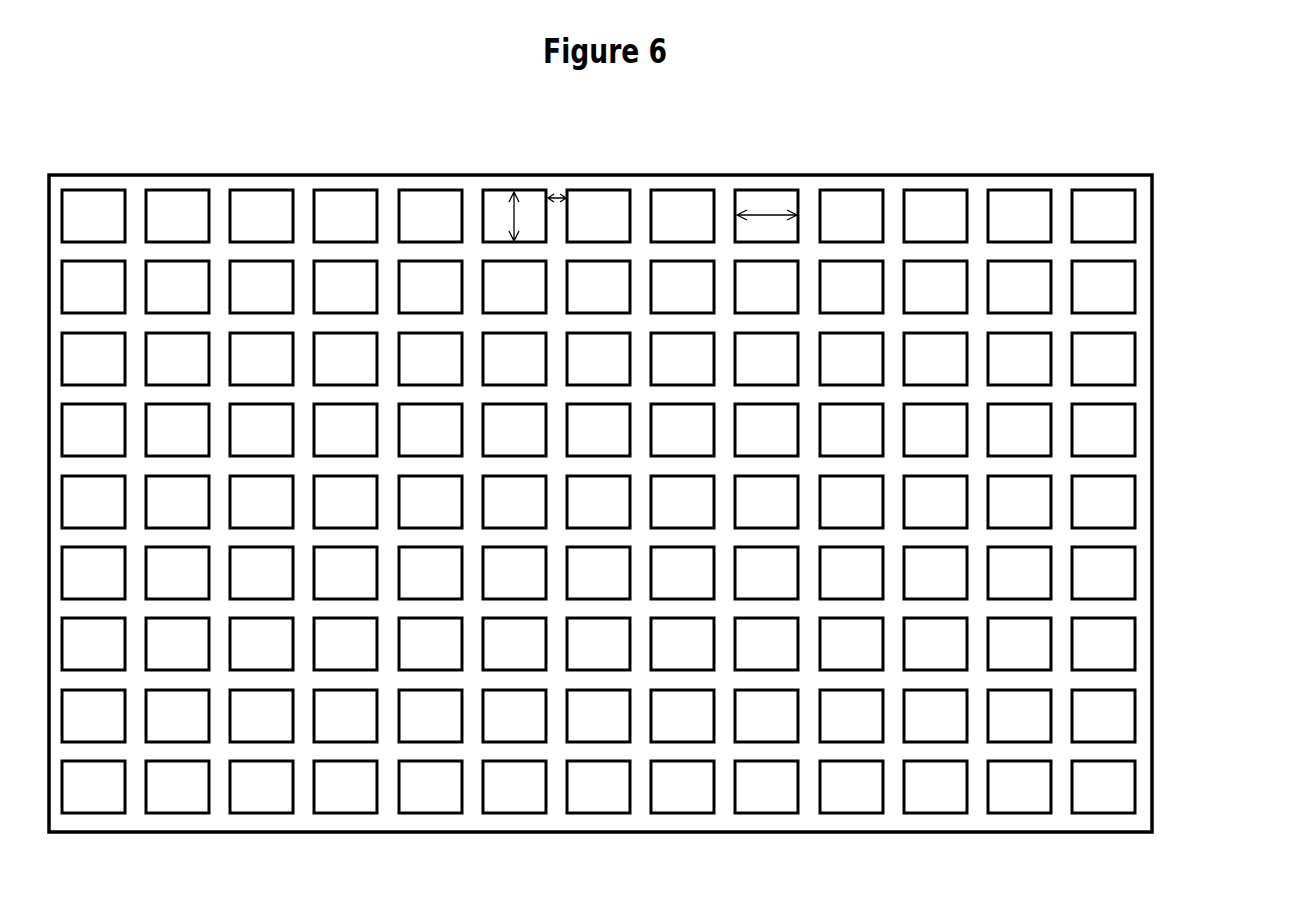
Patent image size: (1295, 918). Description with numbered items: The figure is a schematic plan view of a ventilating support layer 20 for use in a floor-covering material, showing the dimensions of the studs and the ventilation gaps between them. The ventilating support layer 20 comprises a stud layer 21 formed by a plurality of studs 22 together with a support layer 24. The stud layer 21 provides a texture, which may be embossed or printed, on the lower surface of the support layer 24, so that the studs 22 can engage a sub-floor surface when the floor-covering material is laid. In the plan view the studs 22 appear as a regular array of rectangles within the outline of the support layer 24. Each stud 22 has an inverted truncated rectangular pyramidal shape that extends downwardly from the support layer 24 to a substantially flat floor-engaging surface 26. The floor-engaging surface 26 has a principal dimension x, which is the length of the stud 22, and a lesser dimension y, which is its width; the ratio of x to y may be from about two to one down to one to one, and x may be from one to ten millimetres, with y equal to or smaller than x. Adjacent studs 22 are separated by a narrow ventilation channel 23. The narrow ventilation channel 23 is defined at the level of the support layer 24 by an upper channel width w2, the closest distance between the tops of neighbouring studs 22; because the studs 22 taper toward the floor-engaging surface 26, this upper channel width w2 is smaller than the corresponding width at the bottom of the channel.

The ventilating support layer 20 is at (412, 164).
The stud layer 21 is at (1133, 627).
The stud 22 is at (1133, 284).
The narrow ventilation channel 23 is at (888, 208).
The support layer 24 is at (1062, 184).
The floor-engaging surface 26 is at (1108, 780).
The principal dimension x is at (776, 213).
The lesser dimension y is at (514, 218).
The upper channel width w2 is at (557, 198).